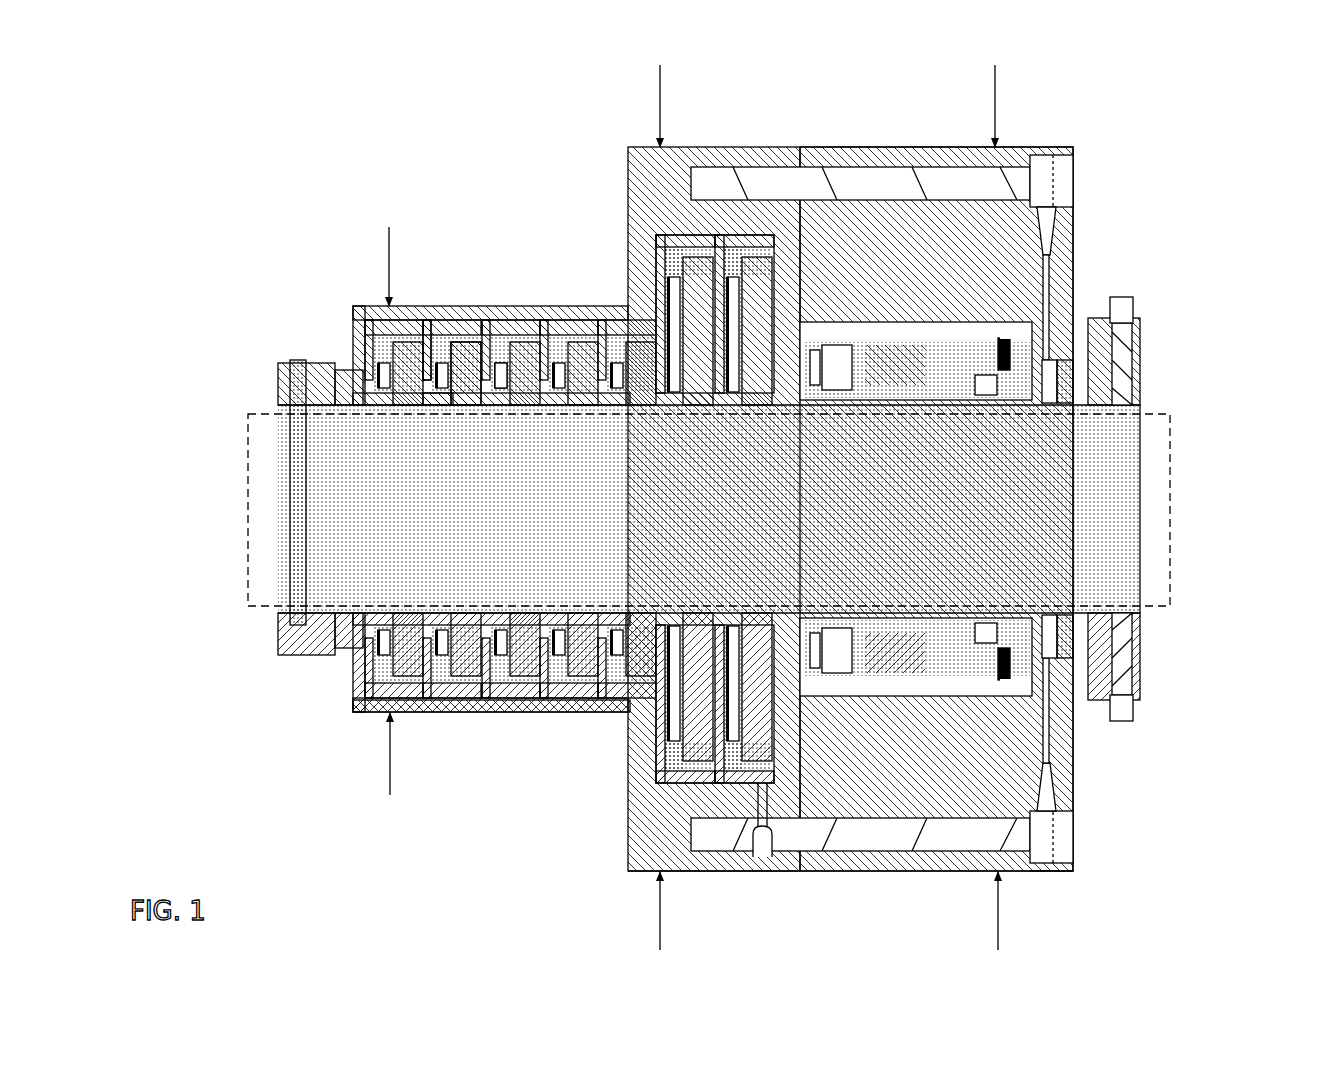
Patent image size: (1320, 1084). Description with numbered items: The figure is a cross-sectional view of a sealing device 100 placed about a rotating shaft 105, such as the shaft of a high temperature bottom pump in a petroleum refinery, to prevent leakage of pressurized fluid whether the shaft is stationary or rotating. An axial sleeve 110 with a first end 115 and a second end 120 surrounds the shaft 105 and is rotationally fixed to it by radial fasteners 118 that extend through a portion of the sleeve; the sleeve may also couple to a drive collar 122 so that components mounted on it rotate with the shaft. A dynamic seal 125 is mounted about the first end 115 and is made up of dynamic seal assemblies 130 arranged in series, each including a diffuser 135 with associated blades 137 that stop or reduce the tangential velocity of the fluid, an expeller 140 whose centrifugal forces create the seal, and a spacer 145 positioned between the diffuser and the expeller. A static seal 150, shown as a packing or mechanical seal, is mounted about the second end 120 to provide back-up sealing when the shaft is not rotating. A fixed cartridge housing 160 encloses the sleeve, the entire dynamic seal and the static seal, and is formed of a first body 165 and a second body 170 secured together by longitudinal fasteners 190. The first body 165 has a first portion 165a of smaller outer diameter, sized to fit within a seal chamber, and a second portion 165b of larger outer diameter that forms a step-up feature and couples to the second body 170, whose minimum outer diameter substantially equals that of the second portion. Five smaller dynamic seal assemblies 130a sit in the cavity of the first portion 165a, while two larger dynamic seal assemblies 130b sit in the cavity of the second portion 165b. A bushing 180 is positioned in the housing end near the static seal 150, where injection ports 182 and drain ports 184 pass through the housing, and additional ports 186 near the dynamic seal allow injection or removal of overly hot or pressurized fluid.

The sealing device 100 is at (258, 160).
The shaft 105 is at (1170, 485).
The axial sleeve 110 is at (293, 363).
The first end 115 is at (278, 393).
The radial fasteners 118 is at (1122, 297).
The second end 120 is at (1140, 400).
The drive collar 122 is at (1140, 345).
The dynamic seal 125 is at (363, 423).
The dynamic seal assemblies 130 is at (363, 605).
The smaller dynamic seal assembly 130a is at (478, 605).
The larger dynamic seal assembly 130b is at (653, 605).
The diffuser 135 is at (428, 405).
The blades 137 is at (437, 345).
The expeller 140 is at (463, 405).
The spacer 145 is at (503, 405).
The static seal 150 is at (805, 423).
The fixed cartridge housing 160 is at (850, 455).
The first body 165 is at (712, 147).
The first portion 165a is at (352, 723).
The second portion 165b is at (800, 881).
The second body 170 is at (918, 147).
The bushing 180 is at (1073, 648).
The injection ports 182 is at (1047, 155).
The drain ports 184 is at (1047, 875).
The additional ports 186 is at (763, 875).
The longitudinal fasteners 190 is at (1073, 838).